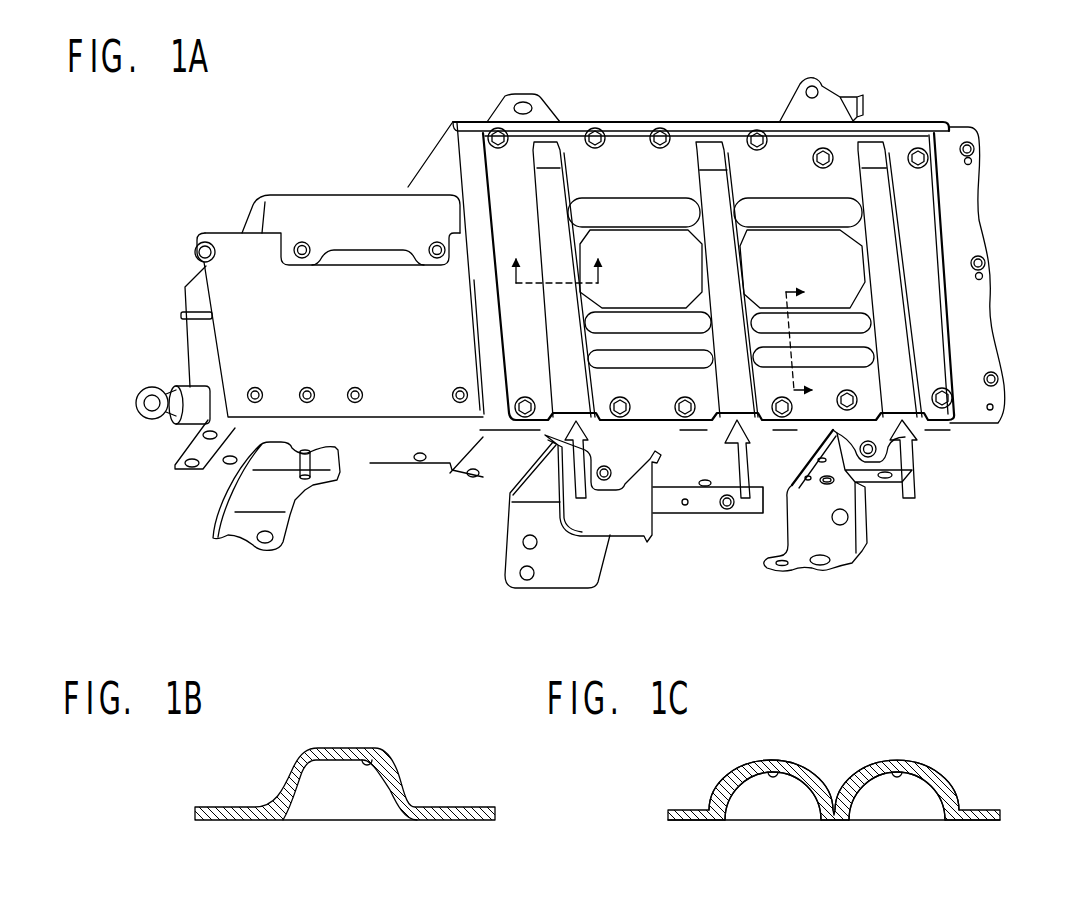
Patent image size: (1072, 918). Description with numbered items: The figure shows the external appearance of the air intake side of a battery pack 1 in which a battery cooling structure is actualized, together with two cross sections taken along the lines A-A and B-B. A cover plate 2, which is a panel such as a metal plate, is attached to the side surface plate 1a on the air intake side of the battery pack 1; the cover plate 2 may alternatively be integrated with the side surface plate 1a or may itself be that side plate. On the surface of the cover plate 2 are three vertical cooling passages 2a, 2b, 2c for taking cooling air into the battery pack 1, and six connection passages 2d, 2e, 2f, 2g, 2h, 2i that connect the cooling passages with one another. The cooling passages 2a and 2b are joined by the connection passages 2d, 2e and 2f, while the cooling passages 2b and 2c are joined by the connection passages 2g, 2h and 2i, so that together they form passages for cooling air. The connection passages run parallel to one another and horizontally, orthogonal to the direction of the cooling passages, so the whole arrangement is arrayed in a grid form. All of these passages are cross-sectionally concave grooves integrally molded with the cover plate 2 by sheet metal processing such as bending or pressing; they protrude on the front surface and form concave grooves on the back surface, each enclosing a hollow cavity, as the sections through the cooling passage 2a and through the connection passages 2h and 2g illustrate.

In FIG. 1A, the battery pack 1 is at (962, 98).
In FIG. 1A, the side surface plate 1a is at (958, 206).
In FIG. 1A, the cover plate 2 is at (500, 175).
In FIG. 1A, the cooling passage 2a is at (570, 178).
In FIG. 1B, the cooling passage 2a is at (375, 758).
In FIG. 1A, the cooling passage 2b is at (732, 190).
In FIG. 1A, the cooling passage 2c is at (885, 195).
In FIG. 1A, the connection passage 2d is at (660, 326).
In FIG. 1A, the connection passage 2e is at (697, 362).
In FIG. 1A, the connection passage 2f is at (643, 205).
In FIG. 1A, the connection passage 2g is at (850, 360).
In FIG. 1C, the connection passage 2g is at (910, 770).
In FIG. 1A, the connection passage 2h is at (845, 318).
In FIG. 1C, the connection passage 2h is at (783, 770).
In FIG. 1A, the connection passage 2i is at (796, 208).